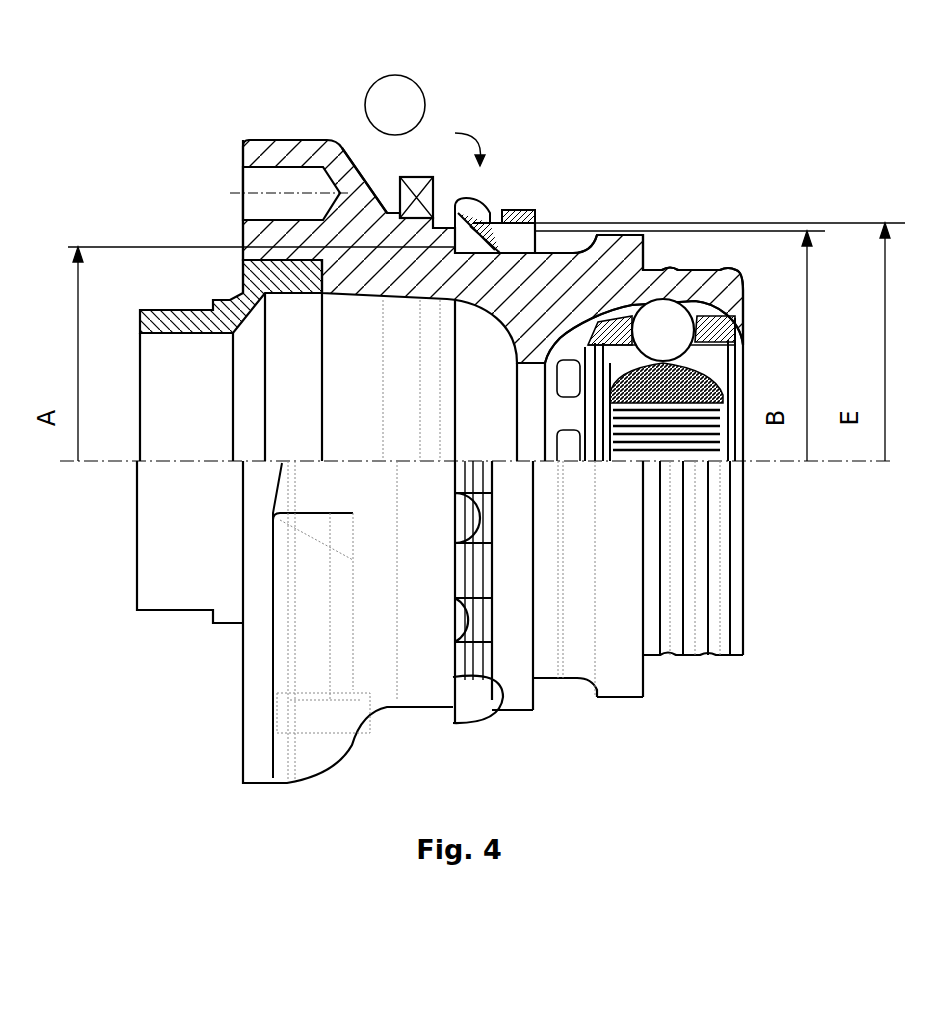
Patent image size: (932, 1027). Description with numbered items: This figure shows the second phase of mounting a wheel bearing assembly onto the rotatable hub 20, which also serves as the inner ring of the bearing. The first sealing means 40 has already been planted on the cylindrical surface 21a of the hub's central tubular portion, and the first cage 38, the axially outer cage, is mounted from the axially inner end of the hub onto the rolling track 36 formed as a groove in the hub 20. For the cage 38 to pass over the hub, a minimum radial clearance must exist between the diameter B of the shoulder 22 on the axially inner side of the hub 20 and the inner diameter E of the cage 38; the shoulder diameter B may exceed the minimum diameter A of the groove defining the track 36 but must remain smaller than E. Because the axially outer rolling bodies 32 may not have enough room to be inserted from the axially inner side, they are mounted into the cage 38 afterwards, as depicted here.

The rotatable hub 20 is at (280, 130).
The cylindrical surface 21a is at (388, 212).
The rolling bodies 32 is at (390, 107).
The first sealing means 40 is at (433, 175).
The rolling track 36 is at (470, 200).
The first cage 38 is at (497, 208).
The shoulder 22 is at (622, 253).